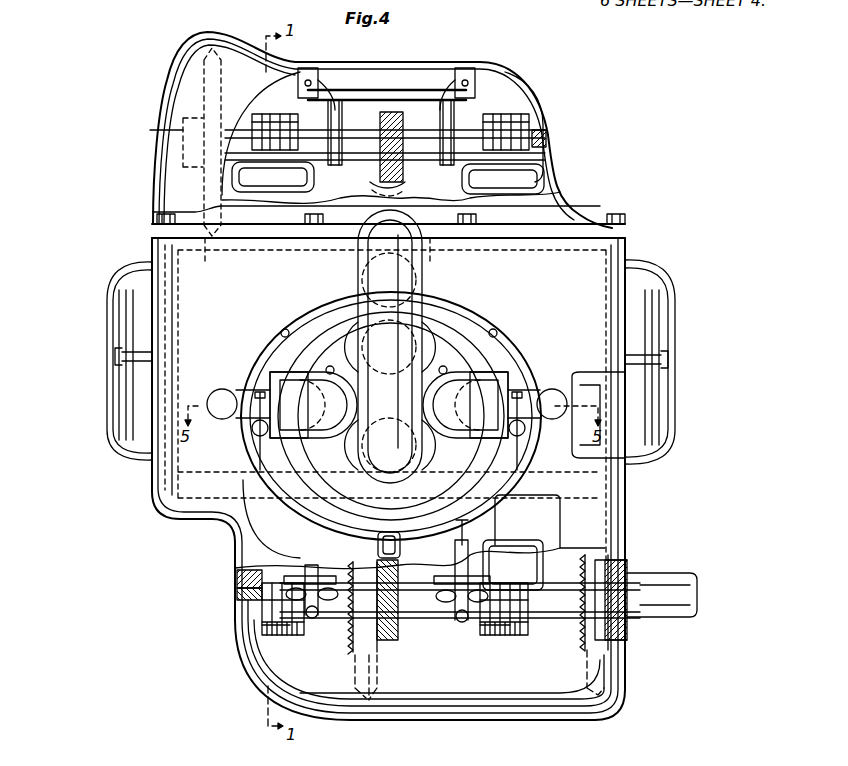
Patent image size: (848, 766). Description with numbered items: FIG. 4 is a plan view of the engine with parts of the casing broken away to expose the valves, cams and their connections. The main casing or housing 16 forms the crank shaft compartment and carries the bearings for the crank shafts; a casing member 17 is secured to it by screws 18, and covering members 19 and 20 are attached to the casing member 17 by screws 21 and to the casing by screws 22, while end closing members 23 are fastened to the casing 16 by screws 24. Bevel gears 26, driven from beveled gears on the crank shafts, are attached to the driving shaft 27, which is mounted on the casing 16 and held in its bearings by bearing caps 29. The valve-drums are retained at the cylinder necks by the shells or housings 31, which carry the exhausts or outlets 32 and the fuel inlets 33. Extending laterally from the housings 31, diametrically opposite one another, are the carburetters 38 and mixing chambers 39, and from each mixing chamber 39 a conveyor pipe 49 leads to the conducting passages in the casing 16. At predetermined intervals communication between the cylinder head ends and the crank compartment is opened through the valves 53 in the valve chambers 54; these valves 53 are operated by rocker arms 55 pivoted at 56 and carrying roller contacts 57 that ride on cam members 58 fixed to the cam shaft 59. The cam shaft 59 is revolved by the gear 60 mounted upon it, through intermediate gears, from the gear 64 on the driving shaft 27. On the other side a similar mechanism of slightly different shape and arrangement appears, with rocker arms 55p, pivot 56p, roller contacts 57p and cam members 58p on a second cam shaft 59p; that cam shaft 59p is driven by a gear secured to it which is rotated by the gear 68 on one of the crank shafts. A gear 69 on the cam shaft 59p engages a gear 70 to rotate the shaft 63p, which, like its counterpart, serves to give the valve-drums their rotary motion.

The main casing or housing 16 is at (595, 280).
The casing member 17 is at (178, 192).
The screws 18 is at (157, 222).
The covering member 19 is at (246, 50).
The covering member 20 is at (540, 700).
The screws 21 is at (183, 135).
The screws 22 is at (262, 578).
The end closing members 23 is at (130, 402).
The screws 24 is at (115, 357).
The bevel gears 26 is at (354, 642).
The driving shaft 27 is at (652, 572).
The bearing caps 29 is at (272, 630).
The shells or housings 31 is at (455, 337).
The exhausts or outlets 32 is at (283, 388).
The fuel inlets 33 is at (376, 300).
The carburetters 38 is at (220, 392).
The mixing chambers 39 is at (254, 434).
The conveyor pipes 49 is at (280, 510).
The valves 53 is at (288, 630).
The valve chambers 54 is at (264, 592).
The rocker arms 55 is at (310, 592).
The pivot 56 is at (322, 588).
The roller contacts 57 is at (463, 524).
The cam members 58 is at (505, 537).
The cam shaft 59 is at (496, 550).
The gear 60 is at (392, 572).
The gear 64 is at (388, 640).
The gear 68 is at (255, 246).
The gear 69 is at (374, 126).
The gear 70 is at (376, 188).
The rocker arms 55p is at (452, 100).
The pivot 56p is at (320, 70).
The roller contacts 57p is at (332, 120).
The cam members 58p is at (330, 190).
The cam shaft 59p is at (412, 142).
The shaft 63p is at (428, 215).